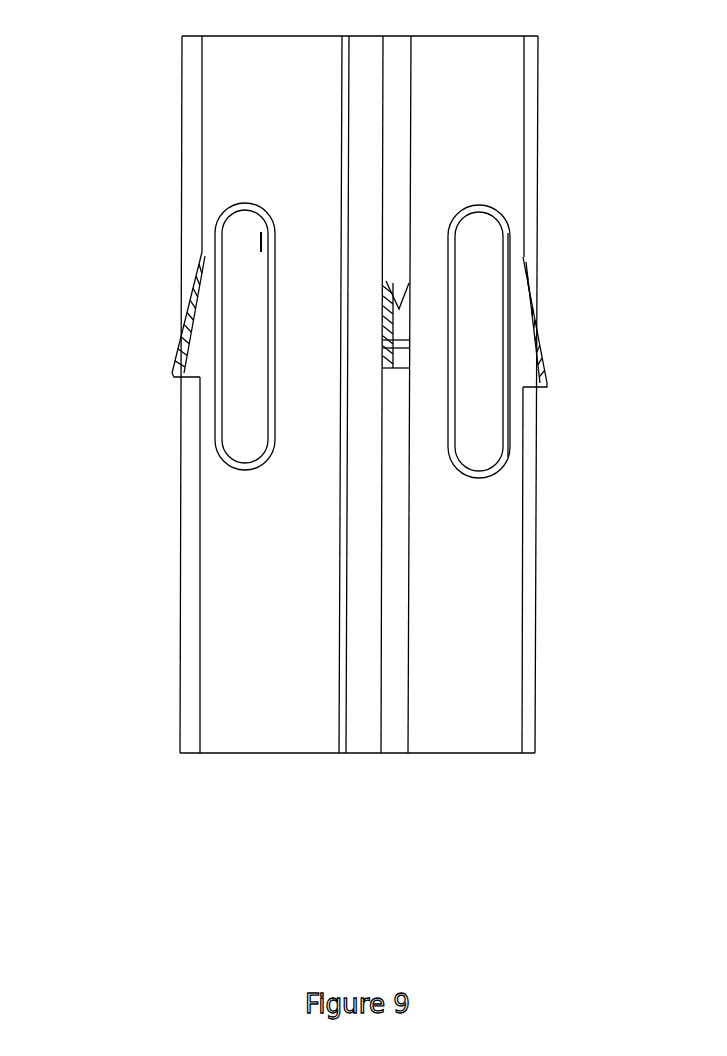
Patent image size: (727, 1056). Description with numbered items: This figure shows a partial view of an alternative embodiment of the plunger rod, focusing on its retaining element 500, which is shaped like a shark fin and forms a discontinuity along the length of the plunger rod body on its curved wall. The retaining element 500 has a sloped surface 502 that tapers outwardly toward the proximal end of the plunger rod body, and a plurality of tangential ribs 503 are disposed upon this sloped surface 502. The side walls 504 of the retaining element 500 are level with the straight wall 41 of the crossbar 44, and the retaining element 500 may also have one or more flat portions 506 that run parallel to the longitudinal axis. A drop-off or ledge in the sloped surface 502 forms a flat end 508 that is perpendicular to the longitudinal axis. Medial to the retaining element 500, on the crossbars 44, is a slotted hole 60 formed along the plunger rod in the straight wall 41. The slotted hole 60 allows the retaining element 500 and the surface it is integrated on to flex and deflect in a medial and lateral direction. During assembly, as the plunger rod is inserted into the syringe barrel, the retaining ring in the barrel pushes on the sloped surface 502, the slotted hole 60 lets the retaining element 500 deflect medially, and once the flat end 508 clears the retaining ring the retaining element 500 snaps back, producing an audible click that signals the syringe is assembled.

The straight wall 41 is at (228, 167).
The crossbar 44 is at (535, 135).
The slotted hole 60 is at (508, 232).
The tangential ribs 503 is at (538, 323).
The retaining element 500 is at (545, 363).
The sloped surface 502 is at (398, 333).
The side walls 504 is at (192, 342).
The flat portions 506 is at (176, 366).
The flat end 508 is at (178, 382).